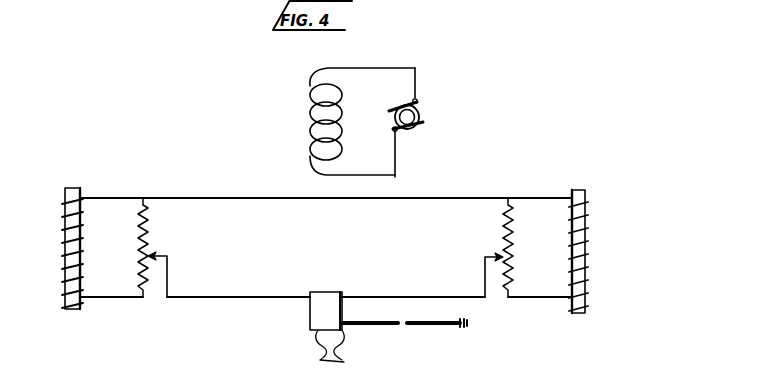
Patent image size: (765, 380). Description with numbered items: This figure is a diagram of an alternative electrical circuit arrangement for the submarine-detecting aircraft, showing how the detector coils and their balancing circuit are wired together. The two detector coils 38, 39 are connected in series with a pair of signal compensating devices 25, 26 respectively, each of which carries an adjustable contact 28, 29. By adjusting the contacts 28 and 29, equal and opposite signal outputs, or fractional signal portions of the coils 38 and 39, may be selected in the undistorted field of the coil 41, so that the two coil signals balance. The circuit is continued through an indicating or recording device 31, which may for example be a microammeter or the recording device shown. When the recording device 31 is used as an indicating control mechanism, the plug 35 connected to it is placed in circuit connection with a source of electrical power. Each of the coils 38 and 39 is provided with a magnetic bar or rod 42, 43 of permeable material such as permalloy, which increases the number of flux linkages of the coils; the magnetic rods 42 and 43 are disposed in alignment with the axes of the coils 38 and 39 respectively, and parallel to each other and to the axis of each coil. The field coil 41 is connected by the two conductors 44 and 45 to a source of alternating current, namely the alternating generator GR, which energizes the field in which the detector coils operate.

The signal compensating device 25 is at (147, 240).
The signal compensating device 26 is at (505, 244).
The contact 28 is at (157, 255).
The contact 29 is at (483, 271).
The indicating or recording device 31 is at (311, 311).
The plug 35 is at (464, 329).
The coil 38 is at (80, 232).
The coil 39 is at (572, 238).
The coil 41 is at (306, 117).
The magnetic rod 42 is at (80, 190).
The magnetic rod 43 is at (573, 190).
The conductor 44 is at (412, 62).
The conductor 45 is at (396, 176).
The alternating generator GR is at (421, 109).